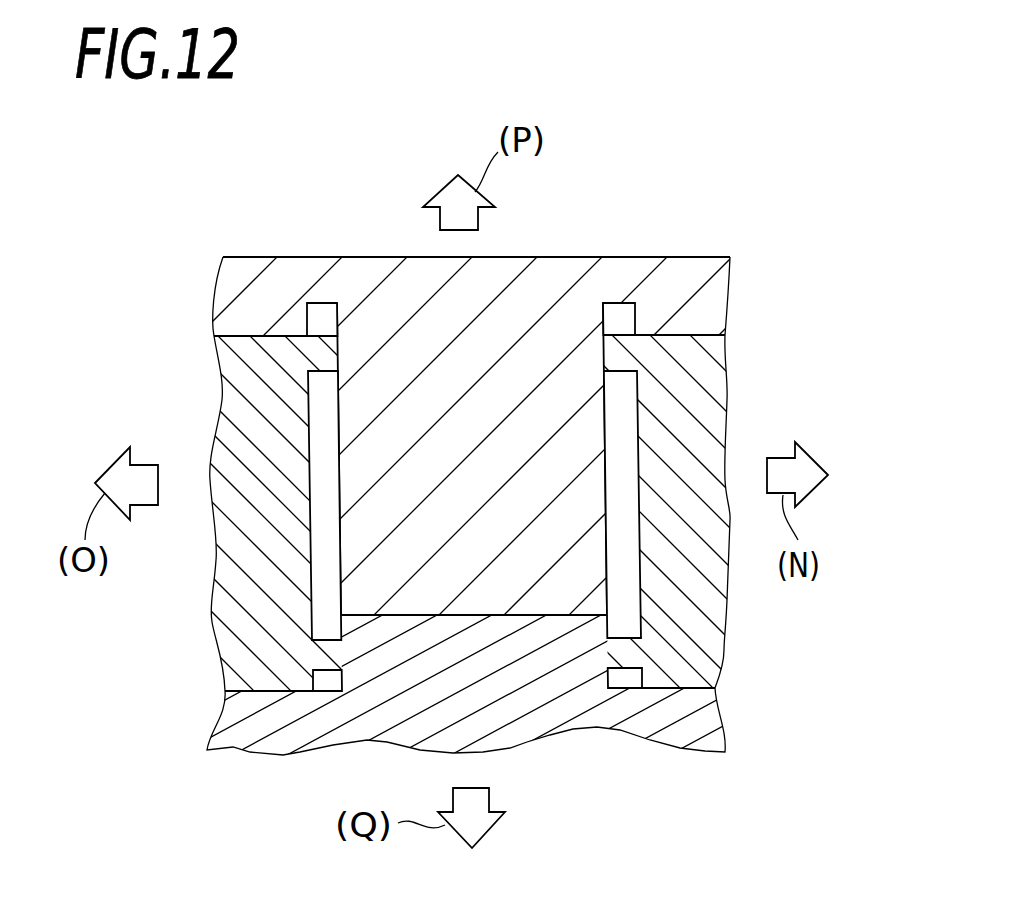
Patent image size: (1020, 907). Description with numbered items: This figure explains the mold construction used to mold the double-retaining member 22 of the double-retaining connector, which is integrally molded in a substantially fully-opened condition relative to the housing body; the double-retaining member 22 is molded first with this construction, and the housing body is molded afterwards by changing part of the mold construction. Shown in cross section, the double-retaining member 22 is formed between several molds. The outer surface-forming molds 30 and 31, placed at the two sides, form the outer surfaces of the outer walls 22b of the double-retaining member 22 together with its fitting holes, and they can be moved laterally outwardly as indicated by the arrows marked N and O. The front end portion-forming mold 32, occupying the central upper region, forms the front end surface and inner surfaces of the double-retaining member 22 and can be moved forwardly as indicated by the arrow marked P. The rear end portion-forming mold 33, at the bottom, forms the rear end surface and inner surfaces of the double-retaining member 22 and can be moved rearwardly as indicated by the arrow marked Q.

The double-retaining member 22 is at (620, 458).
The outer walls 22b is at (627, 505).
The outer surface-forming mold 30 is at (683, 670).
The outer surface-forming mold 31 is at (253, 638).
The front end portion-forming mold 32 is at (538, 290).
The rear end portion-forming mold 33 is at (580, 698).